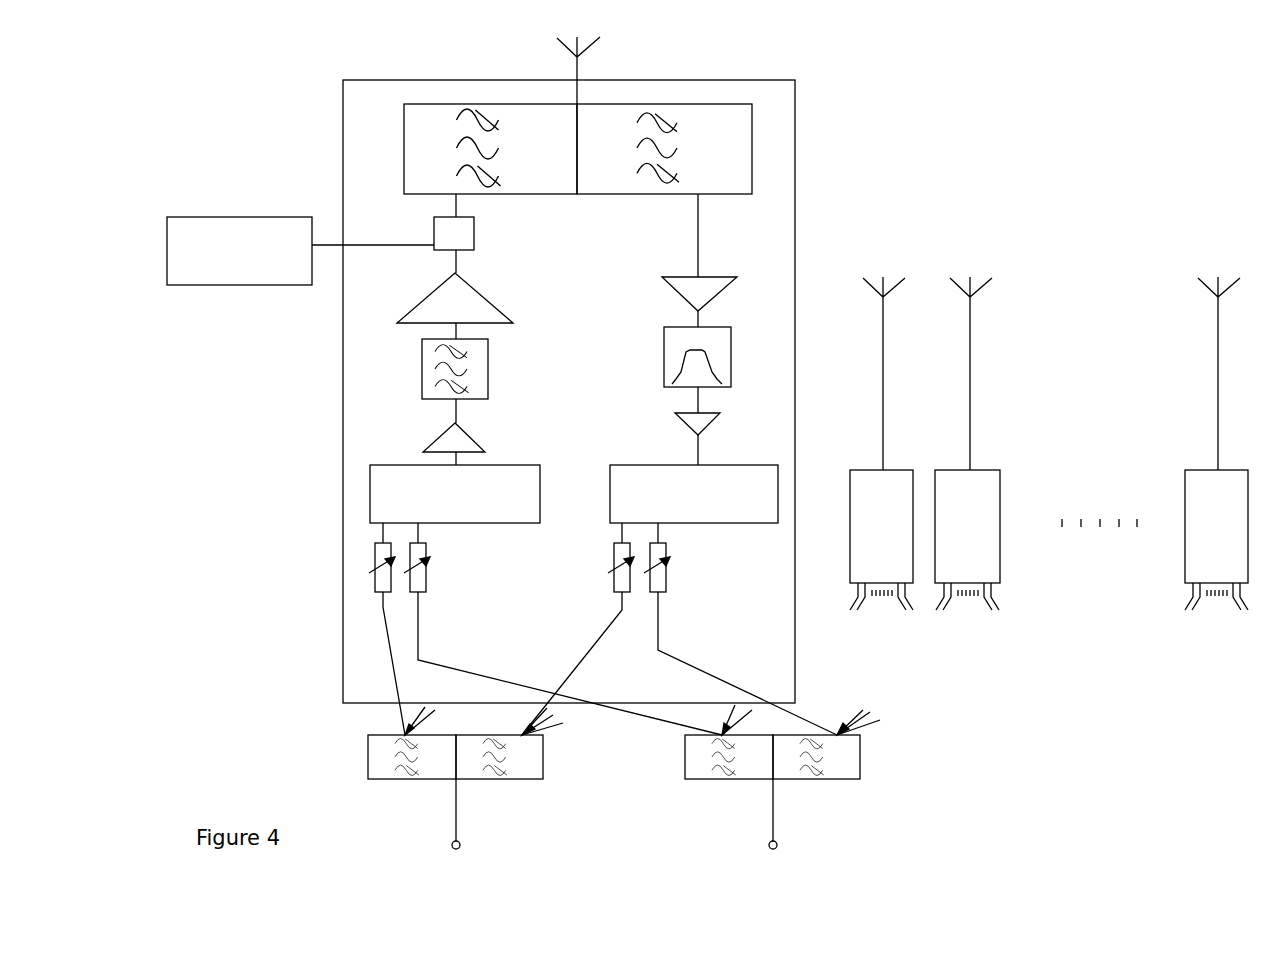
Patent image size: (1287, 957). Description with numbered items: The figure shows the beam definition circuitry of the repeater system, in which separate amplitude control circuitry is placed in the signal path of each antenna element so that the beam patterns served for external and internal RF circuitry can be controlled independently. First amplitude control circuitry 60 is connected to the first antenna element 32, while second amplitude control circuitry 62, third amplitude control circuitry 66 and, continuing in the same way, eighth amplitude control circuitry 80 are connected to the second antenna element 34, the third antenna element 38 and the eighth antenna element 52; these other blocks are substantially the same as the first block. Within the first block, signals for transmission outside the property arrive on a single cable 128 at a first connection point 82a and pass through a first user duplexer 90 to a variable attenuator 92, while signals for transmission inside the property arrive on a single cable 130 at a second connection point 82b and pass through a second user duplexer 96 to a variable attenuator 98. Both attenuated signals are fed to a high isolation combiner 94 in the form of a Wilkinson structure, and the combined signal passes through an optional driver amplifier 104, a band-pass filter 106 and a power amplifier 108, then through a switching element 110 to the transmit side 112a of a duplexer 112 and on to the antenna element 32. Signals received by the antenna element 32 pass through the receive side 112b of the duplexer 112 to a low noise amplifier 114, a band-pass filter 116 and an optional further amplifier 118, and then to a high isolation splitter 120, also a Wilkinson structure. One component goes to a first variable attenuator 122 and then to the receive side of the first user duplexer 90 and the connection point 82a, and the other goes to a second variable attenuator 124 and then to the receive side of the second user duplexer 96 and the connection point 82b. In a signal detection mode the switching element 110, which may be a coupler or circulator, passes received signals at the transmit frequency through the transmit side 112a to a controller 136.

The first antenna element 32 is at (566, 52).
The second antenna element 34 is at (867, 288).
The third antenna element 38 is at (953, 288).
The eighth antenna element 52 is at (1200, 287).
The first amplitude control circuitry 60 is at (796, 122).
The second amplitude control circuitry 62 is at (850, 490).
The third amplitude control circuitry 66 is at (1000, 490).
The eighth amplitude control circuitry 80 is at (1185, 480).
The first connection point 82a is at (462, 843).
The second connection point 82b is at (779, 843).
The first user duplexer 90 is at (368, 746).
The variable attenuator 92 is at (375, 551).
The high isolation combiner 94 is at (370, 490).
The second user duplexer 96 is at (685, 758).
The variable attenuator 98 is at (413, 592).
The driver amplifier 104 is at (440, 438).
The band-pass filter 106 is at (422, 372).
The power amplifier 108 is at (443, 284).
The switching element 110 is at (474, 235).
The duplexer 112 is at (552, 162).
The transmit side of the duplexer 112a is at (424, 104).
The receive side of the duplexer 112b is at (618, 195).
The low noise amplifier 114 is at (678, 292).
The band-pass filter 116 is at (664, 343).
The further amplifier 118 is at (691, 428).
The high isolation splitter 120 is at (610, 492).
The first variable attenuator 122 is at (614, 551).
The second variable attenuator 124 is at (651, 592).
The single cable 128 is at (456, 808).
The single cable 130 is at (773, 808).
The controller 136 is at (253, 217).